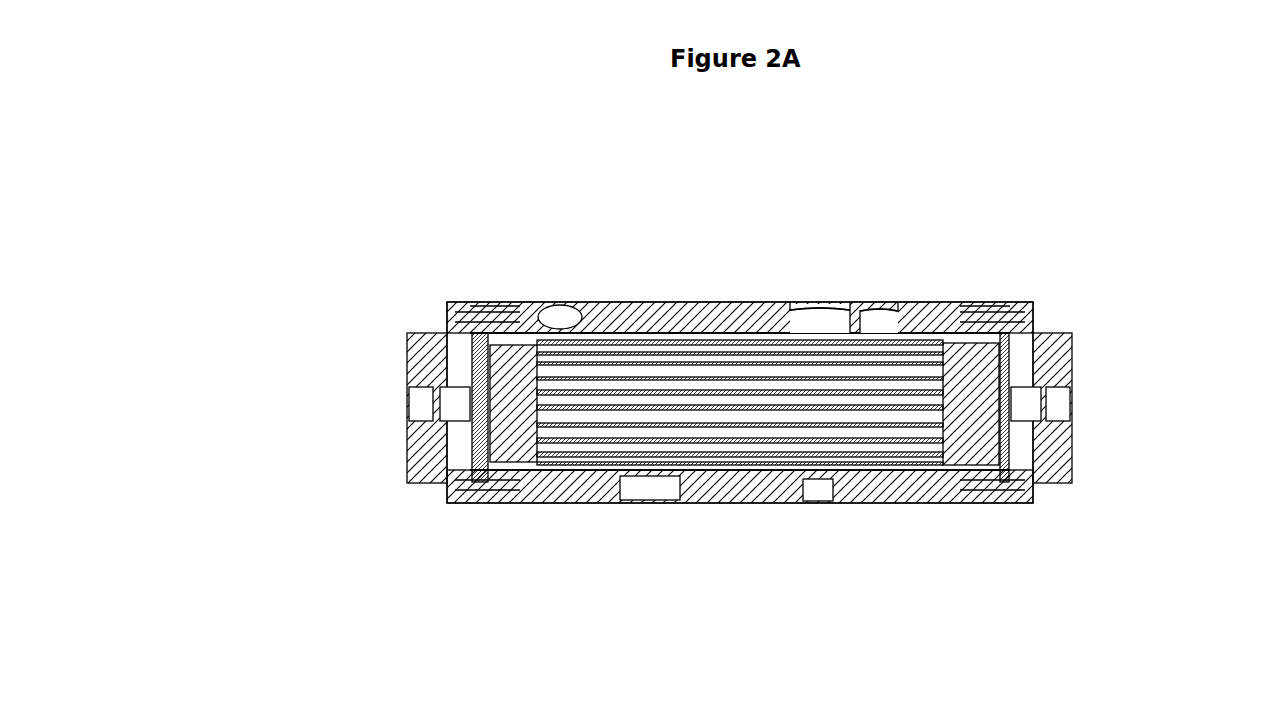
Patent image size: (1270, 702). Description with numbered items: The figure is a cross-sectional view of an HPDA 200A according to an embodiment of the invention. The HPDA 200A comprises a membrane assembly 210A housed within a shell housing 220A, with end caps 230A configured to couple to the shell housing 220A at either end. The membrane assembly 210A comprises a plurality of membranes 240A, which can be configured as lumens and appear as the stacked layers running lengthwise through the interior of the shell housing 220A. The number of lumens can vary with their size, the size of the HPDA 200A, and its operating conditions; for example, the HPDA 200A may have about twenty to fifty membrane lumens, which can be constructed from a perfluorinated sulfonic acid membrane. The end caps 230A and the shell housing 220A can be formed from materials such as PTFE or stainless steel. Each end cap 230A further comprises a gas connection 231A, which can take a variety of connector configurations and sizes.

The HPDA 200A is at (385, 207).
The membrane assembly 210A is at (604, 330).
The shell housing 220A is at (855, 305).
The end cap 230A is at (405, 350).
The gas connection 231A is at (405, 393).
The membrane 240A is at (718, 420).